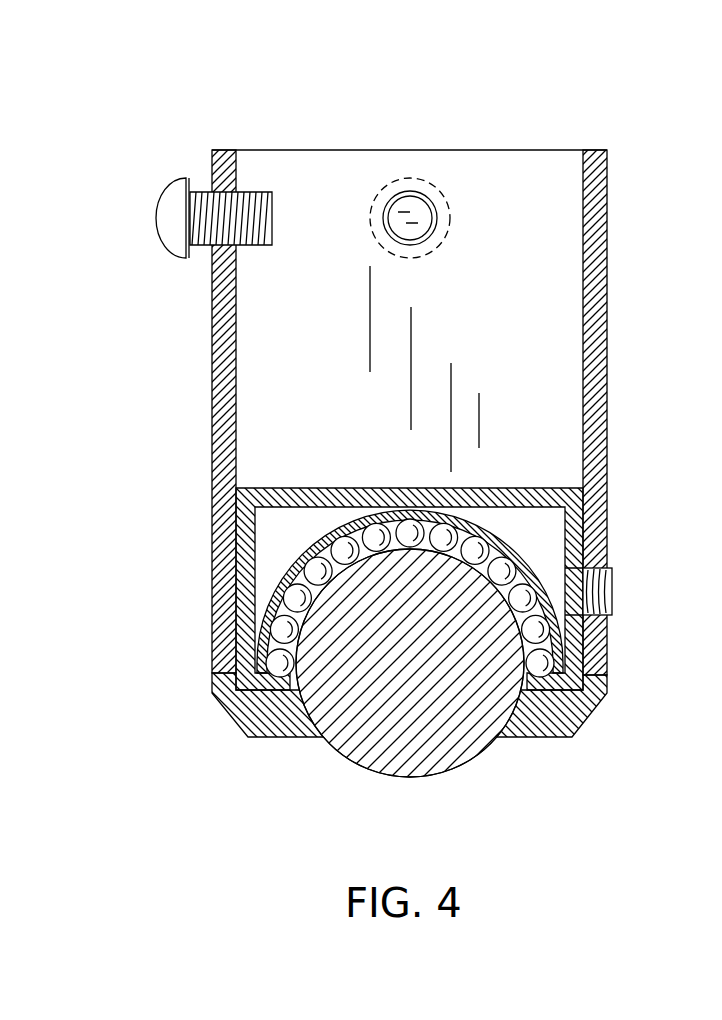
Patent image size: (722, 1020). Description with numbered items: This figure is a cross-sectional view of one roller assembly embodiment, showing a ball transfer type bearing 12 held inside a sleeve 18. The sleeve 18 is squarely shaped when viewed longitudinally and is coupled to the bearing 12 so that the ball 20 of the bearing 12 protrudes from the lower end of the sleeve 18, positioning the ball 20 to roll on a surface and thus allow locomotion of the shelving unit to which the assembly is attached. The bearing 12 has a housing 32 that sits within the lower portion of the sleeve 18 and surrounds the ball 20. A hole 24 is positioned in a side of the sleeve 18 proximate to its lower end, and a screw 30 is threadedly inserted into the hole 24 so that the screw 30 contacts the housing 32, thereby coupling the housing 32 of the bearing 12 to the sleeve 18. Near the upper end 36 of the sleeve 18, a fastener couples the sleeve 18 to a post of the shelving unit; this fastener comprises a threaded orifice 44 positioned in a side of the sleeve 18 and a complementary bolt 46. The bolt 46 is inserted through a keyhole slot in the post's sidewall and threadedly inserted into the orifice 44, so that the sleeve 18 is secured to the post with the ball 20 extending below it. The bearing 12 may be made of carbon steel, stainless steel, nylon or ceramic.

The bearing 12 is at (520, 598).
The sleeve 18 is at (212, 350).
The ball 20 is at (455, 728).
The hole 24 is at (597, 590).
The screw 30 is at (610, 613).
The housing 32 is at (575, 523).
The upper end 36 is at (293, 150).
The orifice 44 is at (223, 150).
The bolt 46 is at (167, 219).